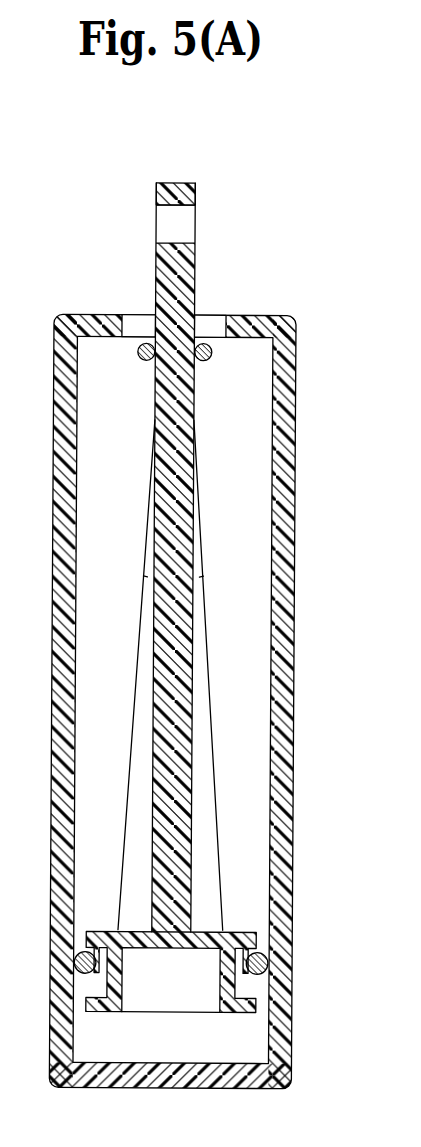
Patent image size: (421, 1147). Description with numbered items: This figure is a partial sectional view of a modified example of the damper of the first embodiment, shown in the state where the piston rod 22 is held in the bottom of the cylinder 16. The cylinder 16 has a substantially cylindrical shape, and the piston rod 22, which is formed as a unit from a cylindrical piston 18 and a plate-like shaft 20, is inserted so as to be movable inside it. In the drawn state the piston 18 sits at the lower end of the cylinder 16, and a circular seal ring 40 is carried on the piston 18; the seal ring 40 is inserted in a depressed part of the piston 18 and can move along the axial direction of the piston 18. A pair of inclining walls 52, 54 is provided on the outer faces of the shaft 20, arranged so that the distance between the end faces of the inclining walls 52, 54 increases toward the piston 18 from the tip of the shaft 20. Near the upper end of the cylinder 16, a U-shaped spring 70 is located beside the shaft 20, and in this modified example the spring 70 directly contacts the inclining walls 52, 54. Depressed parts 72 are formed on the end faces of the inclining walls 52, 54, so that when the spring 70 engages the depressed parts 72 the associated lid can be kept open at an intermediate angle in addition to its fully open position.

The cylinder 16 is at (285, 851).
The piston 18 is at (239, 1011).
The shaft 20 is at (186, 296).
The piston rod 22 is at (214, 218).
The seal ring 40 is at (270, 958).
The inclining wall 52 is at (204, 816).
The inclining wall 54 is at (124, 838).
The spring 70 is at (207, 358).
The depressed part 72 is at (147, 577).